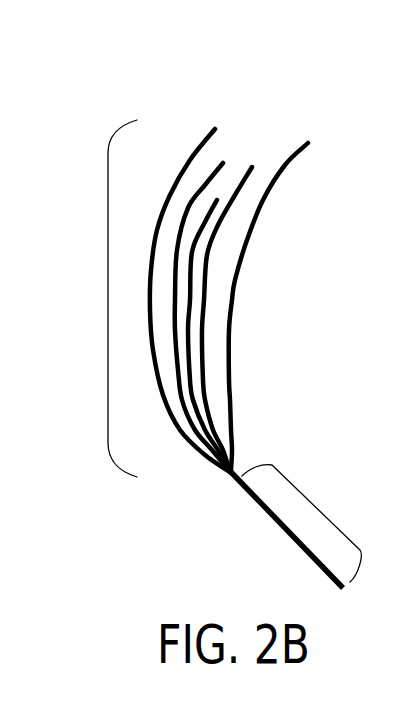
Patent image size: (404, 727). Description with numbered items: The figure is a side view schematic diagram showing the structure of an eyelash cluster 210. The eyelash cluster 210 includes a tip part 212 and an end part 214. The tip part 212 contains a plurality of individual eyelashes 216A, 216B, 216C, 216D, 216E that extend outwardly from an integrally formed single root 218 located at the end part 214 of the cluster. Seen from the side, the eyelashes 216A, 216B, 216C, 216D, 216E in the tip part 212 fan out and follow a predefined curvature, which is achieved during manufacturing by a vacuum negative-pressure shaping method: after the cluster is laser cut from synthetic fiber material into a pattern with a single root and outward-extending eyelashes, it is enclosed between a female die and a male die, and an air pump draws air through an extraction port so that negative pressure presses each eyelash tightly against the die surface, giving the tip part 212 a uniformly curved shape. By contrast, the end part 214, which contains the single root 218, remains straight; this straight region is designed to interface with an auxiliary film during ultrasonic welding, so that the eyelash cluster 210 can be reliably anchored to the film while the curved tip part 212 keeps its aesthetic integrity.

The eyelash cluster 210 is at (250, 68).
The tip part 212 is at (108, 300).
The end part 214 is at (318, 508).
The individual eyelash 216A is at (264, 203).
The individual eyelash 216B is at (213, 262).
The individual eyelash 216C is at (190, 308).
The individual eyelash 216D is at (175, 355).
The individual eyelash 216E is at (162, 400).
The integrally formed single root 218 is at (272, 518).